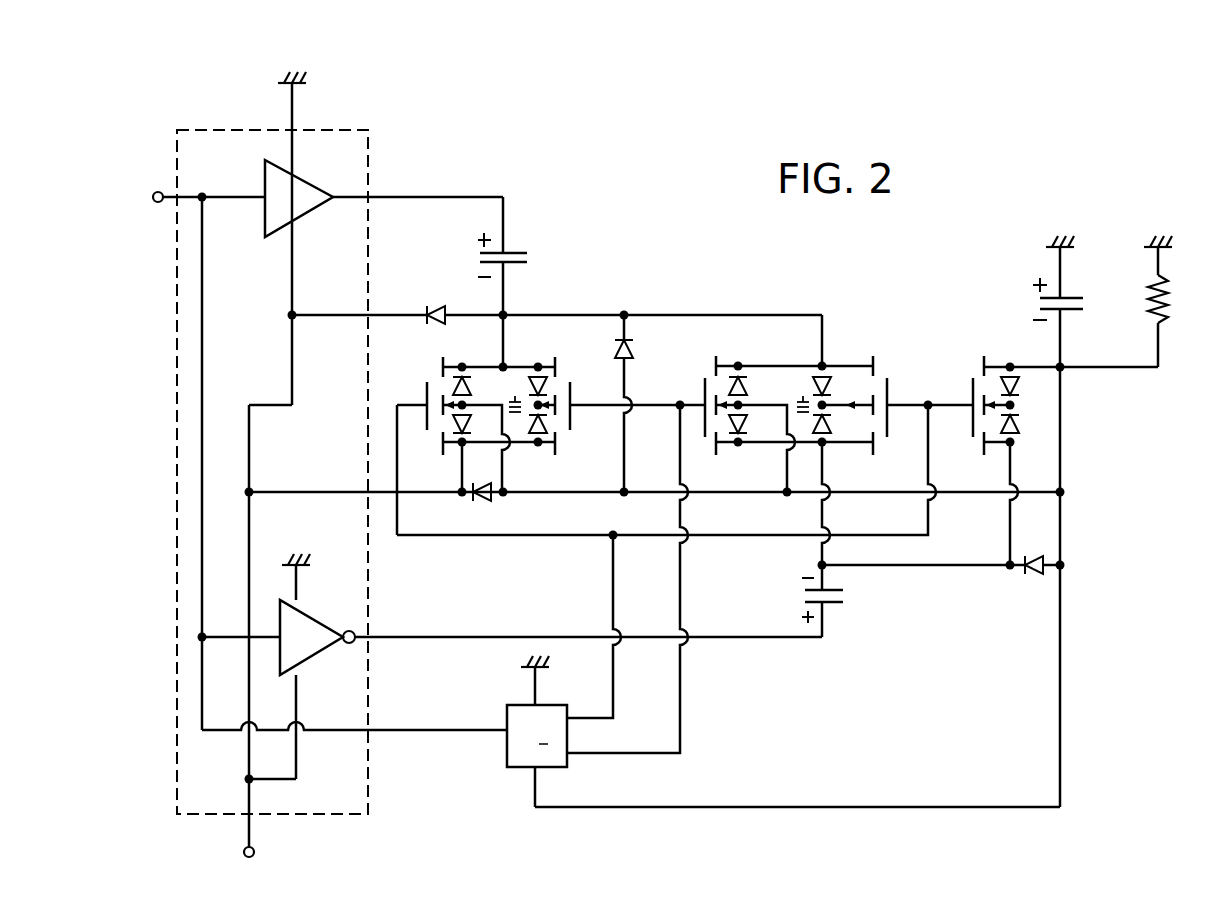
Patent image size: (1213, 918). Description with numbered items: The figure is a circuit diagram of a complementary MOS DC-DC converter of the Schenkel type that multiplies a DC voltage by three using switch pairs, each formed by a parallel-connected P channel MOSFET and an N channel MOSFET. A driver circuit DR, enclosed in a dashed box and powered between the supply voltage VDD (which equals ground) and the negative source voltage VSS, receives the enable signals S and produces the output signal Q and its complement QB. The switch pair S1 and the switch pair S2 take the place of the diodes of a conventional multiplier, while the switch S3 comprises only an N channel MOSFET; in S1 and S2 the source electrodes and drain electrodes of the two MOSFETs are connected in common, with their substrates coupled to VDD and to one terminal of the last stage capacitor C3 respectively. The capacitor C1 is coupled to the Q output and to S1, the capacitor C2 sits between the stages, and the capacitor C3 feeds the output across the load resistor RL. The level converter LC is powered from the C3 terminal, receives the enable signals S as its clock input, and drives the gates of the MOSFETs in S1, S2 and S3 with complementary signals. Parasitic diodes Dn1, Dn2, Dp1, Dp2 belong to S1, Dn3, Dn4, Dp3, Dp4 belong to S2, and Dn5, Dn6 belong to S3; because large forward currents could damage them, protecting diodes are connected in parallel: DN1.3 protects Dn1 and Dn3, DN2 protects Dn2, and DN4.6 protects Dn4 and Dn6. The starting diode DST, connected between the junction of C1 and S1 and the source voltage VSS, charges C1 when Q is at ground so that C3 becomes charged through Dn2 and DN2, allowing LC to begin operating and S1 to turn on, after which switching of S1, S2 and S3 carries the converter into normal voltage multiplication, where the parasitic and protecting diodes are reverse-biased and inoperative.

The driver circuit DR is at (340, 148).
The supply voltage VDD (=GND) VDD is at (305, 221).
The source voltage - VSS is at (251, 864).
The enable signals S is at (195, 198).
The output signal Q is at (418, 185).
The output signal Q-bar QB is at (419, 612).
The capacitor C1 is at (523, 282).
The capacitor C2 is at (836, 539).
The last stage capacitor C3 is at (1073, 521).
The load resistor RL is at (1168, 301).
The starting diode DST is at (555, 302).
The protecting diode DN2 is at (488, 501).
The protecting diode DN1,3 DN1.3 is at (644, 406).
The protecting diode DN4,6 DN4.6 is at (943, 579).
The switch pair S1 is at (497, 413).
The switch pair S2 is at (791, 410).
The switch S3 is at (1063, 395).
The parasitic diode Dn1 is at (475, 387).
The parasitic diode Dn2 is at (473, 427).
The parasitic diode Dn3 is at (753, 388).
The parasitic diode Dn4 is at (753, 427).
The parasitic diode Dn5 is at (1020, 388).
The parasitic diode Dn6 is at (1021, 427).
The parasitic diode Dp1 is at (526, 383).
The parasitic diode Dp2 is at (526, 426).
The parasitic diode Dp3 is at (834, 384).
The parasitic diode Dp4 is at (834, 425).
The level converter LC is at (775, 606).